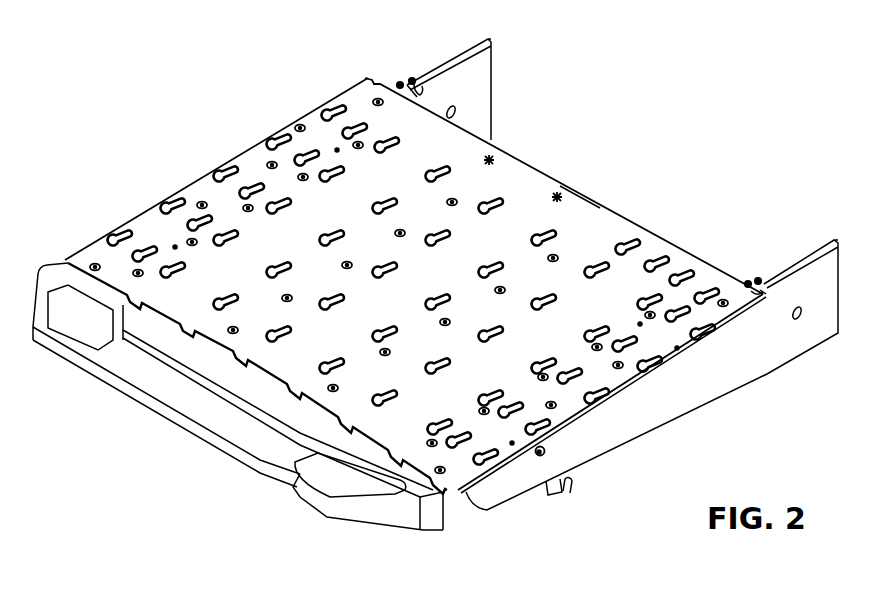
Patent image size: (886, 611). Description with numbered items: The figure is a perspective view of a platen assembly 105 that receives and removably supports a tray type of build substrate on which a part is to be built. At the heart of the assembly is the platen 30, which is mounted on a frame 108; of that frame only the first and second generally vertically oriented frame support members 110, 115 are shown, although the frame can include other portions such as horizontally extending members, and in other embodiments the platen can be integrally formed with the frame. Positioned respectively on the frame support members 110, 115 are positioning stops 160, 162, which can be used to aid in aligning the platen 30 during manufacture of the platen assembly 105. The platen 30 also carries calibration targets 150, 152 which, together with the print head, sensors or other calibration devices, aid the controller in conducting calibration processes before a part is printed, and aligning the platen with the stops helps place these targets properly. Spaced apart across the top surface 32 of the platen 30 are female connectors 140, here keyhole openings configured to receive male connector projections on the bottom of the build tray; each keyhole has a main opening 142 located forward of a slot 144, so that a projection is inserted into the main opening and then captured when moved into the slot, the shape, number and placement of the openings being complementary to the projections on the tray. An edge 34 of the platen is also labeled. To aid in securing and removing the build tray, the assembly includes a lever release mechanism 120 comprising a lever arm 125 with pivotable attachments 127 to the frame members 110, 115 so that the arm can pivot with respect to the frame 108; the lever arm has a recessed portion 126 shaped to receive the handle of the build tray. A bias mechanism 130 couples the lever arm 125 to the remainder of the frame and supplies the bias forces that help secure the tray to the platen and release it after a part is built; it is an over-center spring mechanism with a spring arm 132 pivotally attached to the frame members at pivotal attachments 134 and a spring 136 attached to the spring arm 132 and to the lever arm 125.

The platen assembly 105 is at (185, 78).
The frame 108 is at (616, 90).
The platen 30 is at (202, 183).
The top surface 32 is at (170, 236).
The plate edge 34 is at (573, 215).
The first frame support member 110 is at (458, 77).
The second frame support member 115 is at (816, 280).
The lever release mechanism 120 is at (154, 473).
The lever arm 125 is at (300, 498).
The recessed portion 126 is at (175, 360).
The pivotable attachments 127 is at (470, 495).
The bias mechanism 130 is at (586, 543).
The spring arm 132 is at (568, 490).
The pivotal attachments 134 is at (550, 450).
The spring 136 is at (553, 498).
The female connectors 140 is at (632, 235).
The main openings 142 is at (637, 254).
The slots 144 is at (645, 235).
The calibration target 150 is at (492, 150).
The calibration target 152 is at (558, 190).
The positioning stop 160 is at (399, 82).
The positioning stop 162 is at (758, 288).